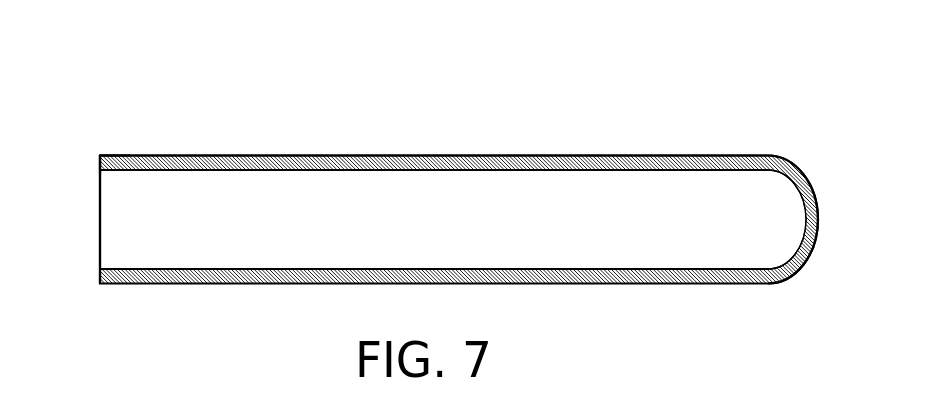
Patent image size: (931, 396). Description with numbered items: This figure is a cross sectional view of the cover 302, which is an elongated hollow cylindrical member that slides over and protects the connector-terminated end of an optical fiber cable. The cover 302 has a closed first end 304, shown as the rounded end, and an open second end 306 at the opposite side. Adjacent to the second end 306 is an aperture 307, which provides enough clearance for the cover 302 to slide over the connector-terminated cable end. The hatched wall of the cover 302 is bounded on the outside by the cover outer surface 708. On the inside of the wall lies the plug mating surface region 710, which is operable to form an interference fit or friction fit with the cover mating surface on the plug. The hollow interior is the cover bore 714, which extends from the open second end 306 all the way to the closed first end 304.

The cover 302 is at (411, 100).
The closed first end 304 is at (811, 162).
The open second end 306 is at (92, 138).
The aperture 307 is at (97, 229).
The cover outer surface 708 is at (225, 155).
The plug mating surface region 710 is at (145, 174).
The cover bore 714 is at (506, 232).